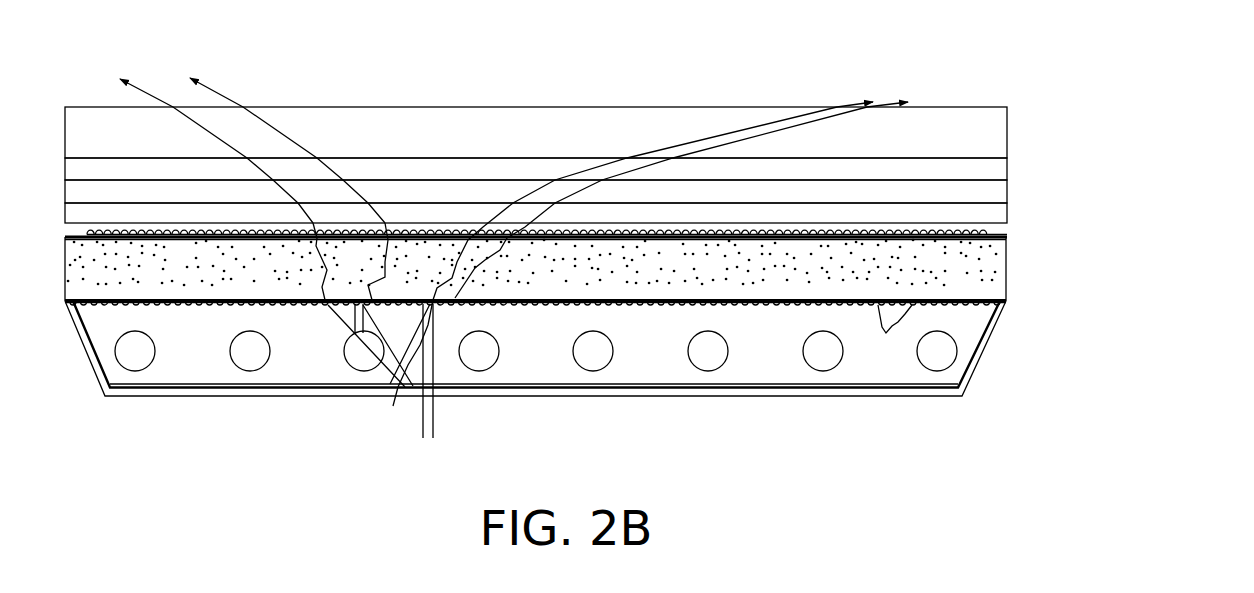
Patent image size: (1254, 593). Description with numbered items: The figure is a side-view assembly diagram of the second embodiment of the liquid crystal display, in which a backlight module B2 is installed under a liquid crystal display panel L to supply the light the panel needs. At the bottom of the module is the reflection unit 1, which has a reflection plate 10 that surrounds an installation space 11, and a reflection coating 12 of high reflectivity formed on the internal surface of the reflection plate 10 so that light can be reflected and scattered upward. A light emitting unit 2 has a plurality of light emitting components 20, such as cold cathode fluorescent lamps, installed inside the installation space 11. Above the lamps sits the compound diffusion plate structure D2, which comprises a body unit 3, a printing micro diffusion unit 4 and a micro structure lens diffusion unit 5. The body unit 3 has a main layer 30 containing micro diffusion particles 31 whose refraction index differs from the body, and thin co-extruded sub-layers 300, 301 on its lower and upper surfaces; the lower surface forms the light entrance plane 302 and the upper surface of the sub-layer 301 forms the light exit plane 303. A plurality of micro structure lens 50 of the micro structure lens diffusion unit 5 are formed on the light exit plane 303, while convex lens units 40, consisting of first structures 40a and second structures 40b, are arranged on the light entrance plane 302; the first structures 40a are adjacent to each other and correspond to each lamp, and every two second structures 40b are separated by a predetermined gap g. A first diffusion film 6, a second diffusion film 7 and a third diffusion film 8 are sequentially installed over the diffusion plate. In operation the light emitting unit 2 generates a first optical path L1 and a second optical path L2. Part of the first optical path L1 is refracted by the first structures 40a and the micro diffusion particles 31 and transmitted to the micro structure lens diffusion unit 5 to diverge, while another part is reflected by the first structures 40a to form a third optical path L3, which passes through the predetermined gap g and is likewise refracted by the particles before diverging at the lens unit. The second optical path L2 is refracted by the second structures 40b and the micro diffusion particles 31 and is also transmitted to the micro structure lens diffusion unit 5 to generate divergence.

The reflection unit 1 is at (607, 380).
The light emitting unit 2 is at (961, 352).
The body unit 3 is at (592, 268).
The printing micro diffusion unit 4 is at (1109, 322).
The micro structure lens diffusion unit 5 is at (592, 218).
The first diffusion film 6 is at (1010, 204).
The second diffusion film 7 is at (1010, 189).
The third diffusion film 8 is at (1010, 166).
The reflection plate 10 is at (969, 395).
The installation space 11 is at (907, 378).
The reflection coating 12 is at (982, 367).
The light emitting components 20 is at (809, 366).
The main layer 30 is at (1006, 283).
The micro diffusion particles 31 is at (994, 259).
The convex lens units 40 is at (891, 337).
The first structures 40a is at (363, 312).
The second structures 40b is at (322, 307).
The micro structure lens 50 is at (991, 225).
The sub-layer 300 is at (961, 312).
The sub-layer 301 is at (1007, 239).
The light entrance plane 302 is at (999, 305).
The light exit plane 303 is at (1002, 235).
The liquid crystal display panel L is at (1010, 127).
The first optical path L1 is at (355, 312).
The second optical path L2 is at (352, 312).
The third optical path L3 is at (637, 269).
The predetermined gap g is at (403, 433).
The compound diffusion plate structure D2 is at (1118, 218).
The backlight module B2 is at (1158, 112).